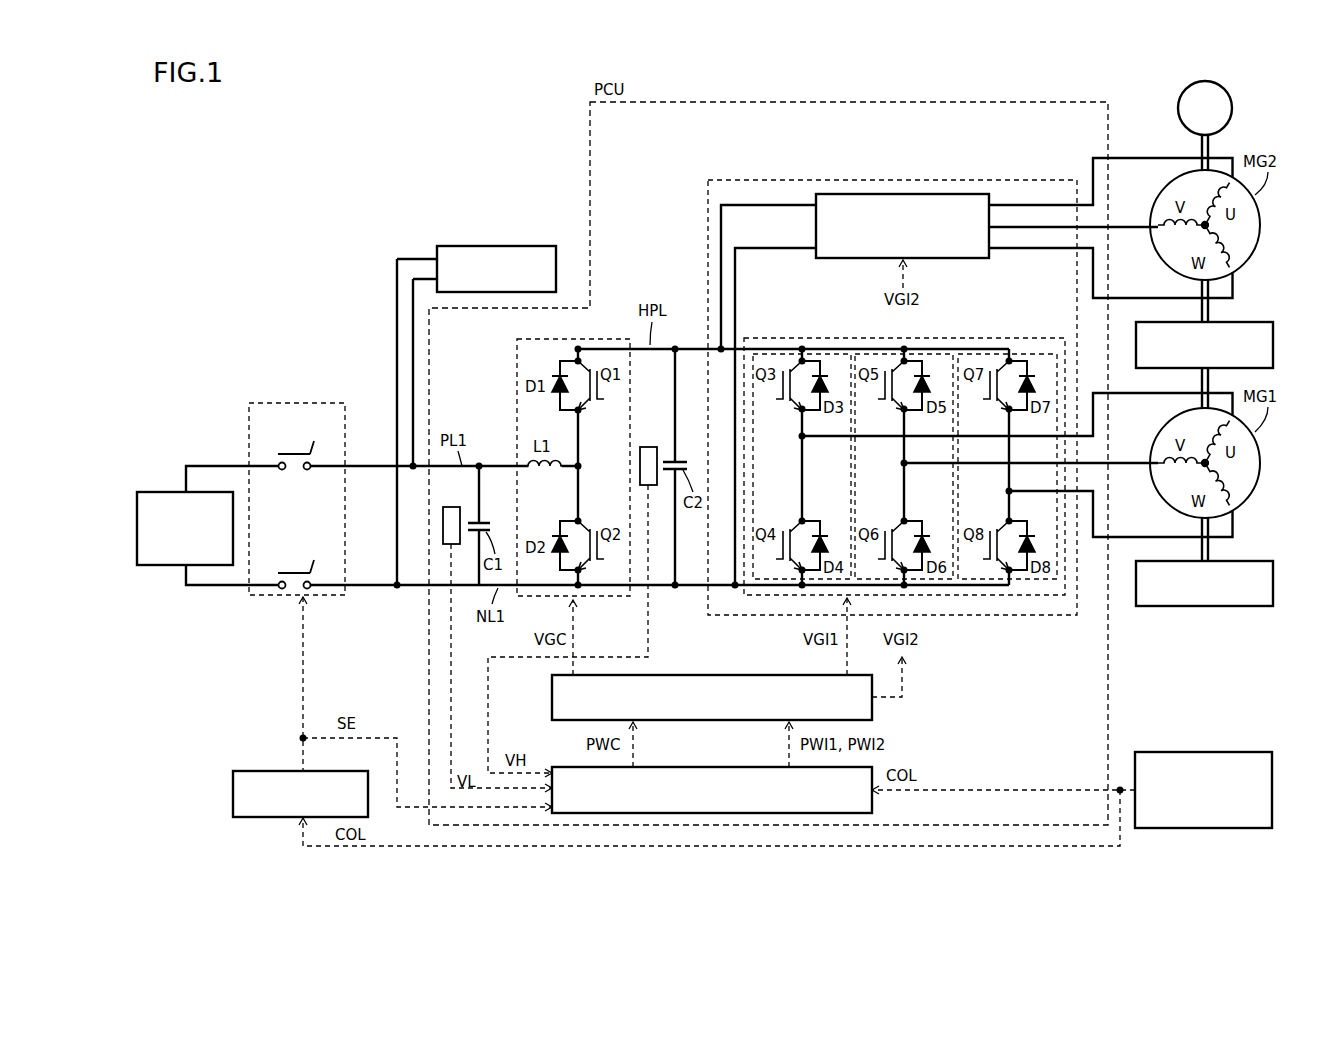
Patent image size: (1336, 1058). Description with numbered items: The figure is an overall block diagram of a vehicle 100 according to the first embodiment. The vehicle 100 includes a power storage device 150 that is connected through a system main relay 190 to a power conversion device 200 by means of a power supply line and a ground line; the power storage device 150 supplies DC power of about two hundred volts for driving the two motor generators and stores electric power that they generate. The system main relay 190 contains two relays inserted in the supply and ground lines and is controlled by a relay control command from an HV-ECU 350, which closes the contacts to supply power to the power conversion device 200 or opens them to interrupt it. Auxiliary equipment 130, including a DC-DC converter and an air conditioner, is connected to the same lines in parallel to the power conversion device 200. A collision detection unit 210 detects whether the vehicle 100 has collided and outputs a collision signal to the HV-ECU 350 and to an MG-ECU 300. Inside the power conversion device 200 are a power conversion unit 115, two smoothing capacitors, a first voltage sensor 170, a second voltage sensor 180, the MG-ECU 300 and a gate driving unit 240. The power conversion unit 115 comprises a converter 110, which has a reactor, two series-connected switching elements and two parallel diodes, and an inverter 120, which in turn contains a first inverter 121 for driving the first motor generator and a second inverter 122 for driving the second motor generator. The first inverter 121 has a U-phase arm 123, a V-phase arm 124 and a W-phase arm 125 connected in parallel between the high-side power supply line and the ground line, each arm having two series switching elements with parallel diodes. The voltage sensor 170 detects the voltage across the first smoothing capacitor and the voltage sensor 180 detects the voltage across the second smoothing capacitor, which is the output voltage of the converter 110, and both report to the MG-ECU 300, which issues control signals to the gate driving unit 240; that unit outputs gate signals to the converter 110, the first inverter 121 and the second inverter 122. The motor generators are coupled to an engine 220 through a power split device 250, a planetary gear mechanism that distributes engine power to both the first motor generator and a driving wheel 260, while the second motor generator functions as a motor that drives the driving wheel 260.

The vehicle 100 is at (211, 178).
The converter 110 is at (613, 338).
The power conversion unit 115 is at (745, 141).
The inverter 120 is at (711, 179).
The inverter 121 is at (772, 337).
The inverter 122 is at (960, 258).
The U-phase arm 123 is at (825, 353).
The V-phase arm 124 is at (943, 353).
The W-phase arm 125 is at (1036, 353).
The auxiliary equipment 130 is at (515, 246).
The power storage device 150 is at (152, 491).
The voltage sensor 170 is at (451, 506).
The voltage sensor 180 is at (648, 446).
The system main relay 190 is at (327, 402).
The power conversion device (PCU) 200 is at (590, 123).
The collision detection unit 210 is at (1228, 752).
The engine 220 is at (1228, 561).
The gate driving unit 240 is at (705, 675).
The power split device 250 is at (1228, 322).
The driving wheel 260 is at (1233, 106).
The MG-ECU 300 is at (705, 767).
The HV-ECU 350 is at (322, 771).